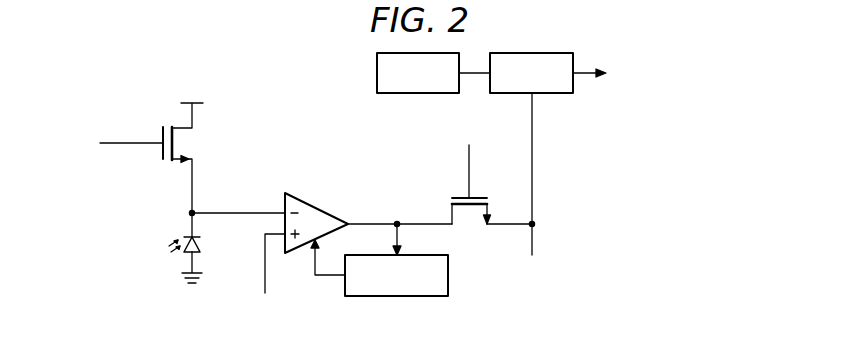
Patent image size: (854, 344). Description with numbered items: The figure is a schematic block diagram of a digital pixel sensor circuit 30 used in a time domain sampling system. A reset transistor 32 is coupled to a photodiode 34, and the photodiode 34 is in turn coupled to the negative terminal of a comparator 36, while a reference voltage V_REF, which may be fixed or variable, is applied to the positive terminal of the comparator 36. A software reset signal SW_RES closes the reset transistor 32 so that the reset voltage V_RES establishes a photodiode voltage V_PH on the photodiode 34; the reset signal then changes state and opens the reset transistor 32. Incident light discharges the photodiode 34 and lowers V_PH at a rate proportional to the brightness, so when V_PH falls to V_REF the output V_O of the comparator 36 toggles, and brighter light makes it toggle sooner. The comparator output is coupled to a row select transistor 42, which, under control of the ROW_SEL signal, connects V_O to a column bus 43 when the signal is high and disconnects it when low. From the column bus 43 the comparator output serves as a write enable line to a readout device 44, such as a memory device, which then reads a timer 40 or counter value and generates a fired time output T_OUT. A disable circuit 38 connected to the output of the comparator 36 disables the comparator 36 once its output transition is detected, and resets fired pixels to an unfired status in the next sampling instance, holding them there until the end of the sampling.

The digital pixel sensor circuit 30 is at (284, 57).
The reset transistor 32 is at (163, 131).
The photodiode 34 is at (198, 243).
The comparator 36 is at (313, 205).
The disable circuit 38 is at (448, 279).
The timer 40 is at (377, 66).
The row select transistor 42 is at (459, 196).
The column bus 43 is at (541, 173).
The readout device 44 is at (540, 52).